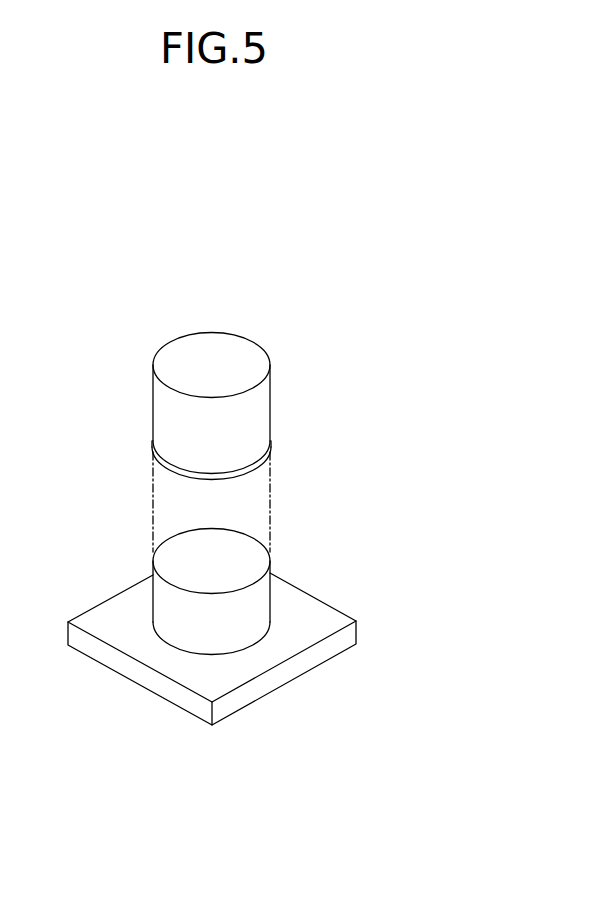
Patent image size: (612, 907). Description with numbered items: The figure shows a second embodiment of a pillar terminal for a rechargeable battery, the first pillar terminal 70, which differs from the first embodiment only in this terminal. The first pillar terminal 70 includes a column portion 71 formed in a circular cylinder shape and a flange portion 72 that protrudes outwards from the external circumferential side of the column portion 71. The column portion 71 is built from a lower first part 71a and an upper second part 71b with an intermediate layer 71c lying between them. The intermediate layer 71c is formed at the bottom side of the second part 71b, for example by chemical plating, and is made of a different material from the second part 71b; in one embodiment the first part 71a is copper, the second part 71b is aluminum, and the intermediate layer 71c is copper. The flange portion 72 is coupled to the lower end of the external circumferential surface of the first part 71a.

The first pillar terminal 70 is at (97, 324).
The column portion 71 is at (404, 398).
The first part 71a is at (253, 608).
The second part 71b is at (255, 410).
The intermediate layer 71c is at (240, 471).
The flange portion 72 is at (313, 617).